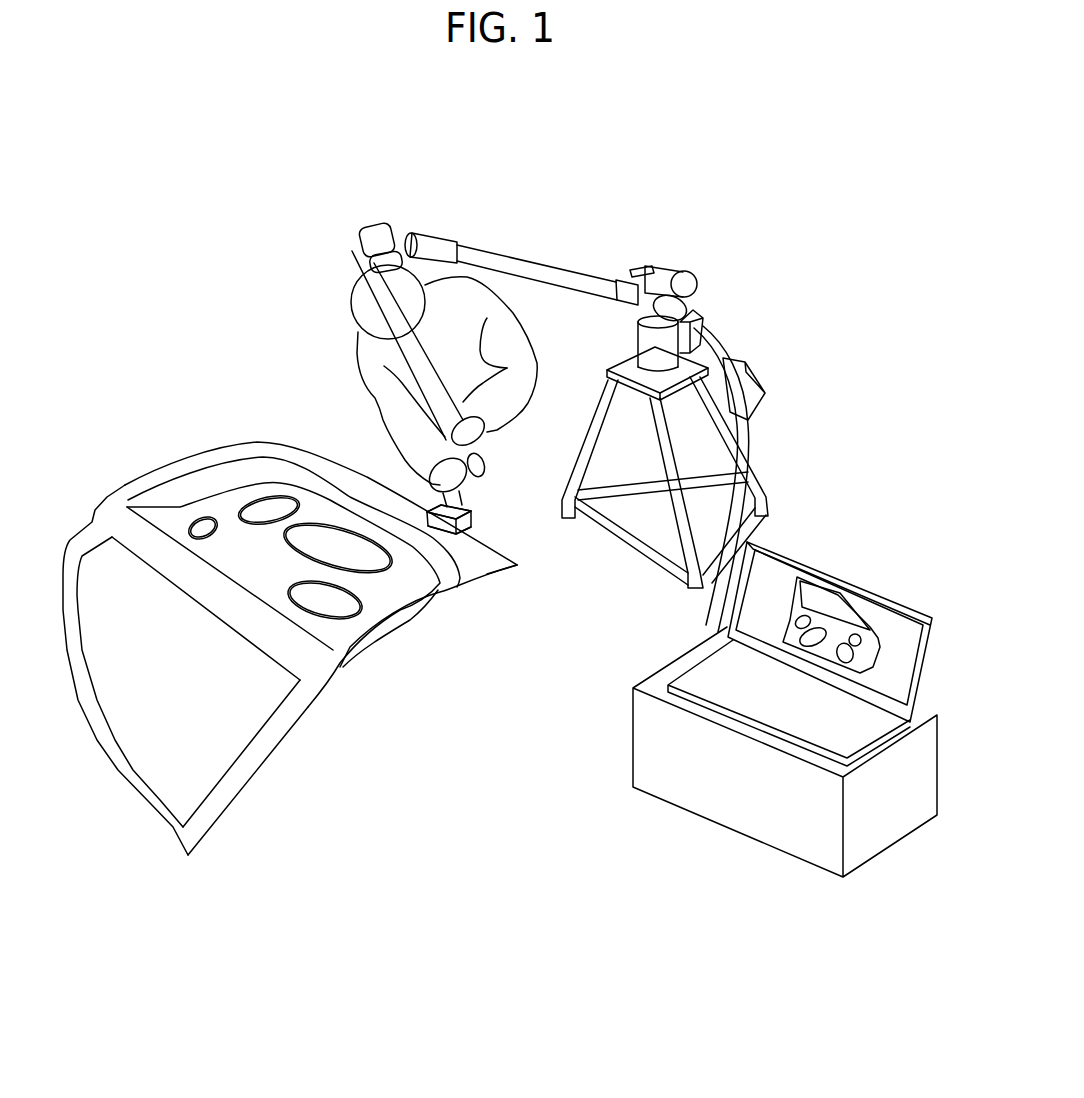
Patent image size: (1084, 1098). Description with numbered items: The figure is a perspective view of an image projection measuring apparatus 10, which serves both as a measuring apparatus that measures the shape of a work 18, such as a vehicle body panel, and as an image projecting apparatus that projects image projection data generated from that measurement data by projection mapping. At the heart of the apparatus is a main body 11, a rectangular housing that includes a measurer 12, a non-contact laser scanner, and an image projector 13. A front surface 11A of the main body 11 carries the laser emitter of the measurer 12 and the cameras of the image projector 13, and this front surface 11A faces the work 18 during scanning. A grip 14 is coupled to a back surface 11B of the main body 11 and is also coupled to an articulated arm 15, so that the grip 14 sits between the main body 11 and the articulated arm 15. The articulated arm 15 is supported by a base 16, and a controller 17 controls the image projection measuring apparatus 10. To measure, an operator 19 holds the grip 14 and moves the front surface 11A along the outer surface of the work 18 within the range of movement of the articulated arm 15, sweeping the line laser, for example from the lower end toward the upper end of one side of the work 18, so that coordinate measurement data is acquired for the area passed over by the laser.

The image projection measuring apparatus 10 is at (517, 158).
The main body 11 is at (473, 525).
The measurer 12 is at (449, 512).
The image projector 13 is at (449, 530).
The front surface 11A is at (500, 567).
The back surface 11B is at (467, 503).
The grip 14 is at (465, 490).
The articulated arm 15 is at (502, 256).
The base 16 is at (622, 358).
The controller 17 is at (787, 550).
The work 18 is at (121, 497).
The operator 19 is at (360, 353).